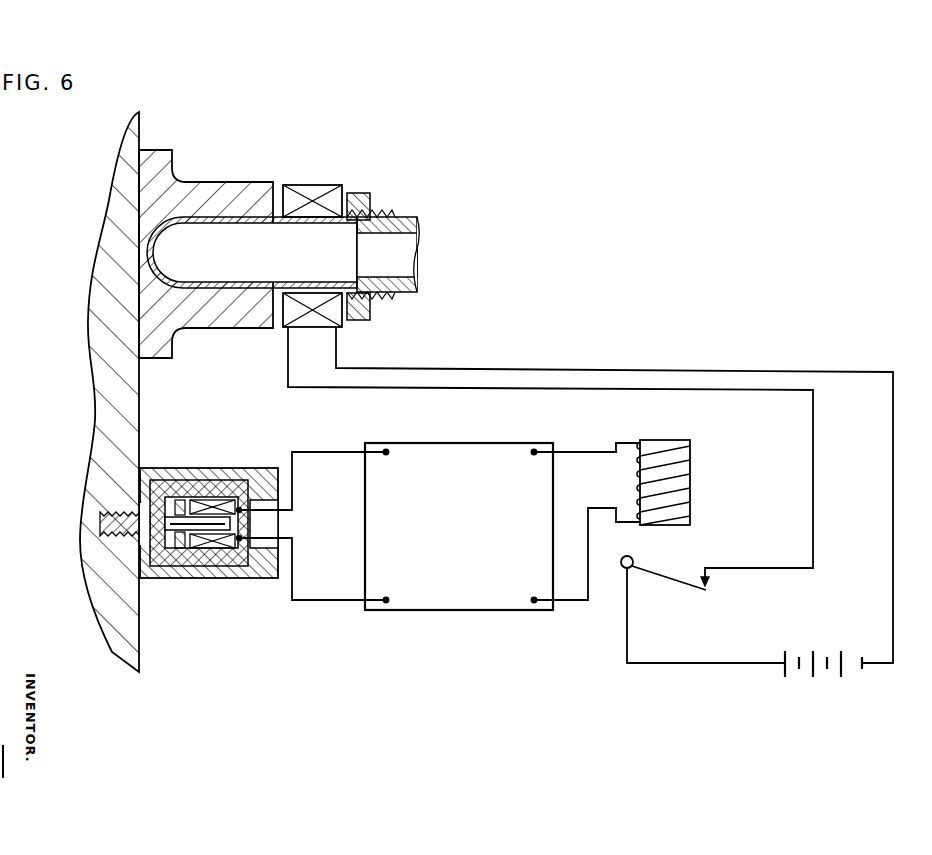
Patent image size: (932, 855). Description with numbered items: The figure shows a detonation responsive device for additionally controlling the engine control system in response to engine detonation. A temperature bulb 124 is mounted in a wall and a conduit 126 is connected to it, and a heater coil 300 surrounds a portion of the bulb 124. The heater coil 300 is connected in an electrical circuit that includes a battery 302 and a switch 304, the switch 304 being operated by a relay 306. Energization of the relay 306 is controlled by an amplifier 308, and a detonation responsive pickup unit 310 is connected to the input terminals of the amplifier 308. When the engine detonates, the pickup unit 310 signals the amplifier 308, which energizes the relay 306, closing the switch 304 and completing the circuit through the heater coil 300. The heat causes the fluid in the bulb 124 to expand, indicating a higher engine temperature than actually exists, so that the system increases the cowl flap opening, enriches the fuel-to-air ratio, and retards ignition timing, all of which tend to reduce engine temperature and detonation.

The temperature bulb 124 is at (277, 213).
The conduit 126 is at (402, 217).
The heater coil 300 is at (322, 184).
The battery 302 is at (815, 656).
The switch 304 is at (672, 579).
The relay 306 is at (670, 445).
The amplifier 308 is at (495, 601).
The detonation responsive pickup unit 310 is at (300, 532).